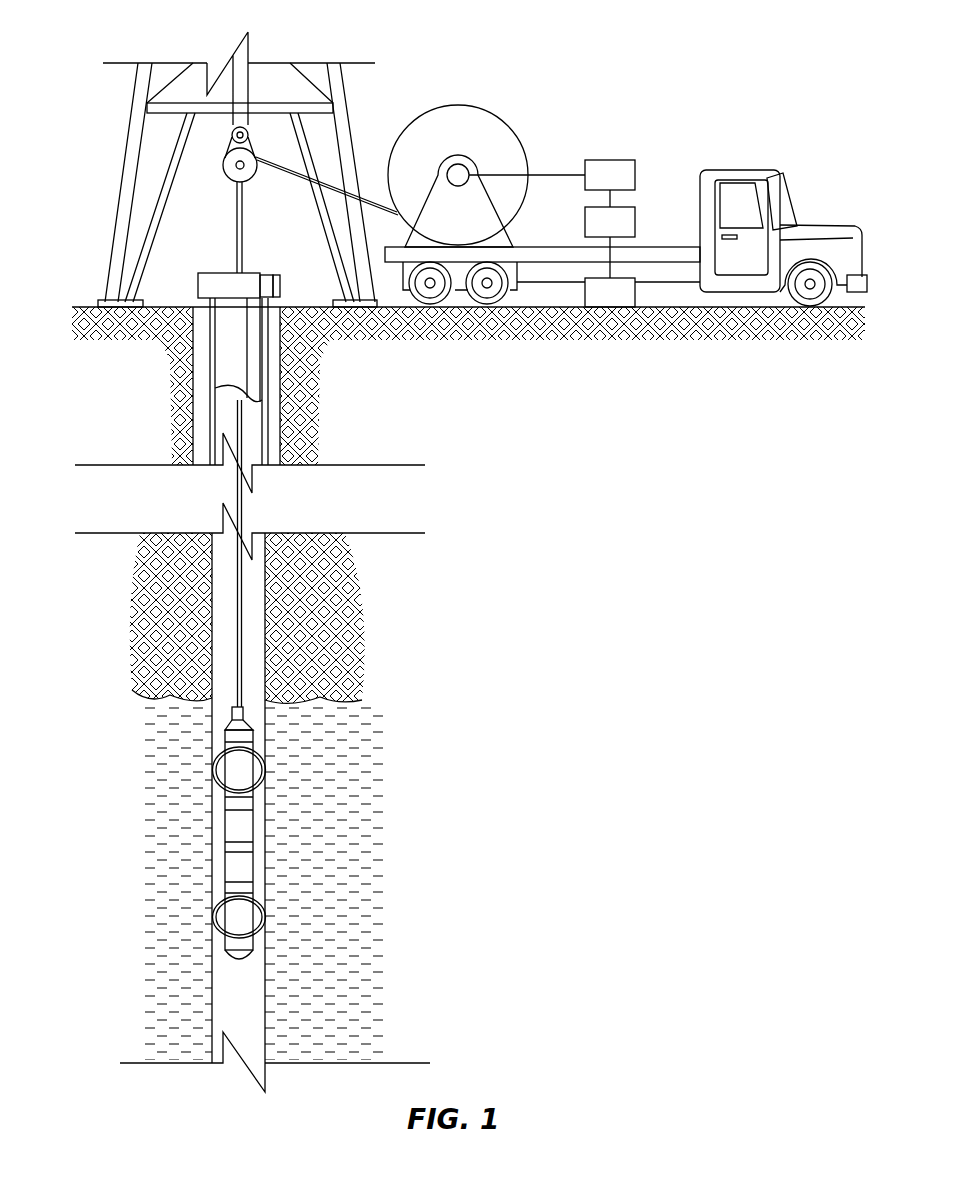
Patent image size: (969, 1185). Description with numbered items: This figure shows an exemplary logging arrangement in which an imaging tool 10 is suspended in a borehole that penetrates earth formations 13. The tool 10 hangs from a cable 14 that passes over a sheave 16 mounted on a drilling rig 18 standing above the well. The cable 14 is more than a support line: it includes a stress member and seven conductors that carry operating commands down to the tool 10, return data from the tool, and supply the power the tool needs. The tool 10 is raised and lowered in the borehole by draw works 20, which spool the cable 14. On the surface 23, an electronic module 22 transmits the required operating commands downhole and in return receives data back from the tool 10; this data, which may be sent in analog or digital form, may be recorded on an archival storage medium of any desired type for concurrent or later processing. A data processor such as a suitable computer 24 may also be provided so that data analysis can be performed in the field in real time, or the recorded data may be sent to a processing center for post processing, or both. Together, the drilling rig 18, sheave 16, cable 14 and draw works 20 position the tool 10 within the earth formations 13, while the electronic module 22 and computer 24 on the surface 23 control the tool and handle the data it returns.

The imaging tool 10 is at (257, 826).
The earth formations 13 is at (395, 653).
The cable 14 is at (235, 248).
The sheave 16 is at (222, 165).
The drilling rig 18 is at (131, 113).
The draw works 20 is at (458, 106).
The electronic module 22 is at (622, 160).
The surface 23 is at (87, 307).
The computer 24 is at (622, 207).